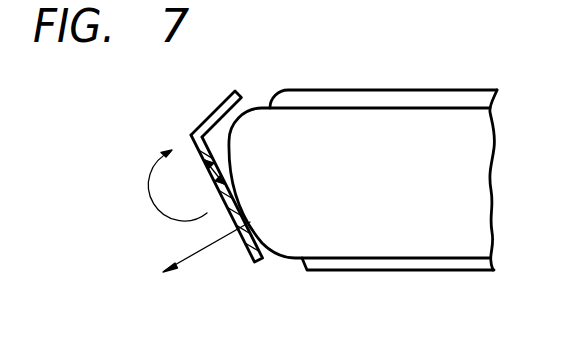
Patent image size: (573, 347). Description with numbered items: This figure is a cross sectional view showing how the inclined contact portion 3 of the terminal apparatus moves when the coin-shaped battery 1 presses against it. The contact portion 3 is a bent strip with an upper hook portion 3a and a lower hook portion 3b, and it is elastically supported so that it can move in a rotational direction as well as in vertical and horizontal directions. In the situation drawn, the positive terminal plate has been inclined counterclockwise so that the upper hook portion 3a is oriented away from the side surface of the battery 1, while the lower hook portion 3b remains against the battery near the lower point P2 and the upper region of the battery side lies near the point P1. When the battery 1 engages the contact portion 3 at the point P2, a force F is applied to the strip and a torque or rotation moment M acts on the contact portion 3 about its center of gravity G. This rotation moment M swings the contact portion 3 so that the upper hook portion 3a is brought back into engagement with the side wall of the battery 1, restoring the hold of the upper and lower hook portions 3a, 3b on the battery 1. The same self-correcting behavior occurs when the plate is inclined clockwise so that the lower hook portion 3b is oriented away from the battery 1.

The battery 1 is at (473, 135).
The contact portion 3 is at (197, 189).
The upper hook portion 3a is at (219, 106).
The lower hook portion 3b is at (241, 242).
The point P1 is at (233, 127).
The point P2 is at (252, 221).
The center of gravity G is at (203, 180).
The rotation moment M is at (169, 189).
The force F is at (198, 257).